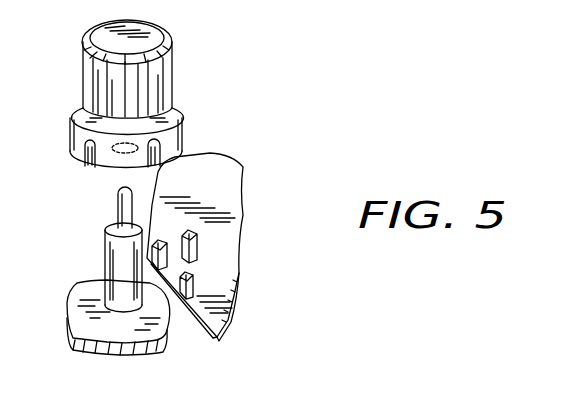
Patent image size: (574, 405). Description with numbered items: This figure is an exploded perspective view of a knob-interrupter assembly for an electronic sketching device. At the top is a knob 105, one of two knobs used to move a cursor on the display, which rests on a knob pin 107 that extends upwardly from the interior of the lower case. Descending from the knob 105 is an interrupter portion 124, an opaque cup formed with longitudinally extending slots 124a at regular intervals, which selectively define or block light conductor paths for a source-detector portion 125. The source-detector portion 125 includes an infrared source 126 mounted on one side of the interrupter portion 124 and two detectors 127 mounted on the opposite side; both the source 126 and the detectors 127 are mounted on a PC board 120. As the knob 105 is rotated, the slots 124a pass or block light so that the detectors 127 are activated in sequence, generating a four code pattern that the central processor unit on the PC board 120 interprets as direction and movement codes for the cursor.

The knob 105 is at (165, 78).
The interrupter portion 124 is at (96, 154).
The longitudinally extending slots 124a is at (96, 168).
The knob pin 107 is at (118, 215).
The detectors 127 is at (183, 285).
The infrared source 126 is at (199, 252).
The source-detector portion 125 is at (200, 269).
The PC board 120 is at (218, 313).